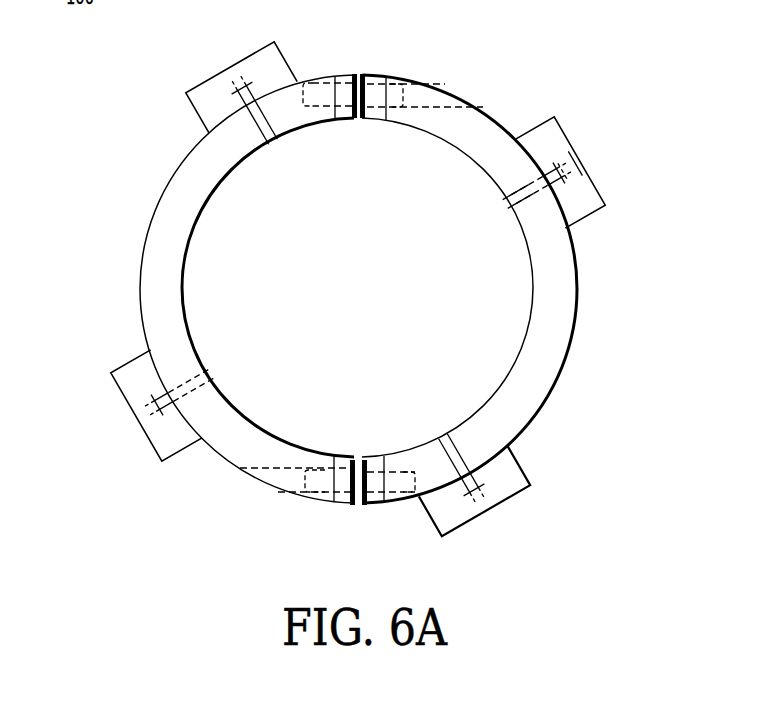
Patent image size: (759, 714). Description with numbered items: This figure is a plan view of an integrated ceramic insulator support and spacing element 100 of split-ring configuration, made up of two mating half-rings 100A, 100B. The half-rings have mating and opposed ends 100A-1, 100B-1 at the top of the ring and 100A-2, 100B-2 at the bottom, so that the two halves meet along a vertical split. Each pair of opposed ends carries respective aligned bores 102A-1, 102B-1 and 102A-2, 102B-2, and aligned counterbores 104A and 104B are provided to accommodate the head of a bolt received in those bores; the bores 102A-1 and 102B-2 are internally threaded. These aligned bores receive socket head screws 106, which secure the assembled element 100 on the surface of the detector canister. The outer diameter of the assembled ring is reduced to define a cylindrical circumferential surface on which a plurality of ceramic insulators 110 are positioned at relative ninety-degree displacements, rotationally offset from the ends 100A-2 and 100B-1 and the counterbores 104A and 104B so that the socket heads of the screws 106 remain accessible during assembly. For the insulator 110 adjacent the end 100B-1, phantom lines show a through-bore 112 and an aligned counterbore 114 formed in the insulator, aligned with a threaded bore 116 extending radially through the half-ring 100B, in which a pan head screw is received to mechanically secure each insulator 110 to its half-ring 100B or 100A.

The integrated ceramic insulator support and spacing element 100 is at (590, 301).
The half-ring 100A is at (169, 190).
The half-ring 100B is at (573, 345).
The end of half-ring 100A-1 is at (333, 119).
The end of half-ring 100B-1 is at (377, 110).
The end of half-ring 100A-2 is at (342, 458).
The end of half-ring 100B-2 is at (372, 458).
The aligned bore 102A-1 is at (348, 45).
The aligned bore 102B-1 is at (423, 40).
The aligned bore 102A-2 is at (340, 486).
The aligned bore 102B-2 is at (376, 506).
The counterbore 104A is at (287, 478).
The counterbore 104B is at (447, 102).
The screw 106 is at (410, 101).
The ceramic insulator 110 is at (199, 80).
The through-bore 112 is at (568, 162).
The counterbore 114 is at (588, 182).
The threaded bore 116 is at (519, 210).